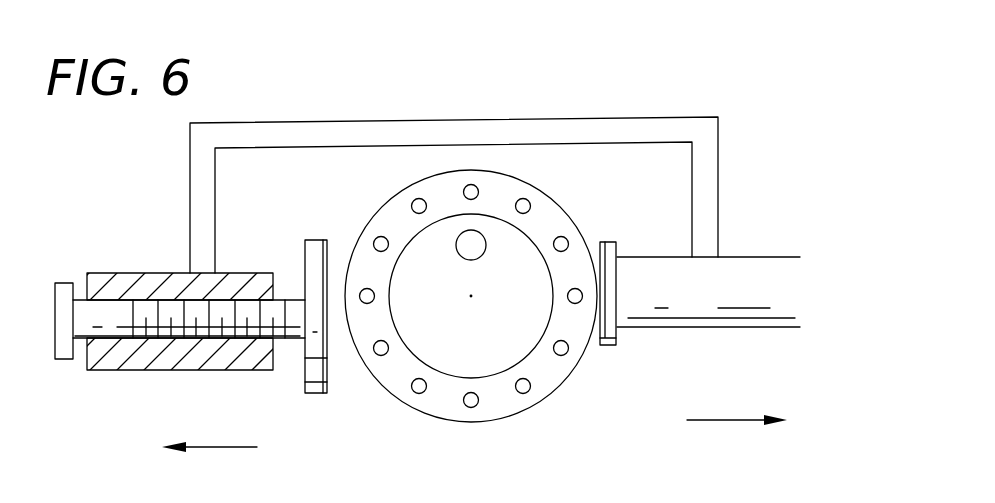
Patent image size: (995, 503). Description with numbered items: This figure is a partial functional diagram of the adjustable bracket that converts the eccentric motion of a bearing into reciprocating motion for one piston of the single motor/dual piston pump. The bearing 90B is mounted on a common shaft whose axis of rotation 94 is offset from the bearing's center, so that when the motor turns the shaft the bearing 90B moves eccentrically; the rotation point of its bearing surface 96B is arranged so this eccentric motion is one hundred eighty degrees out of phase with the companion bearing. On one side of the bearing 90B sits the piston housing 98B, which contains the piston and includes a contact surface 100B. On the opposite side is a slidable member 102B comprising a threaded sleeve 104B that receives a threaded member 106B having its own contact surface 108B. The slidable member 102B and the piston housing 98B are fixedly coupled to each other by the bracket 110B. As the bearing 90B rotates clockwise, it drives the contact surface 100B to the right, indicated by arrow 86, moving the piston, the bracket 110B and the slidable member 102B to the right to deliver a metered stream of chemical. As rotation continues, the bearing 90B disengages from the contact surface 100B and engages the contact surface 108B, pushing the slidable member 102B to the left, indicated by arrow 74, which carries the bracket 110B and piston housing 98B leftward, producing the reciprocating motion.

The arrow 74 is at (230, 447).
The arrow 86 is at (733, 420).
The bearing 90B is at (520, 398).
The axis of rotation 94 is at (478, 238).
The bearing surface 96B is at (447, 247).
The piston housing 98B is at (750, 272).
The contact surface 100B is at (605, 255).
The slidable member 102B is at (161, 358).
The threaded sleeve 104B is at (265, 338).
The threaded member 106B is at (64, 290).
The contact surface 108B is at (320, 382).
The bracket 110B is at (533, 130).